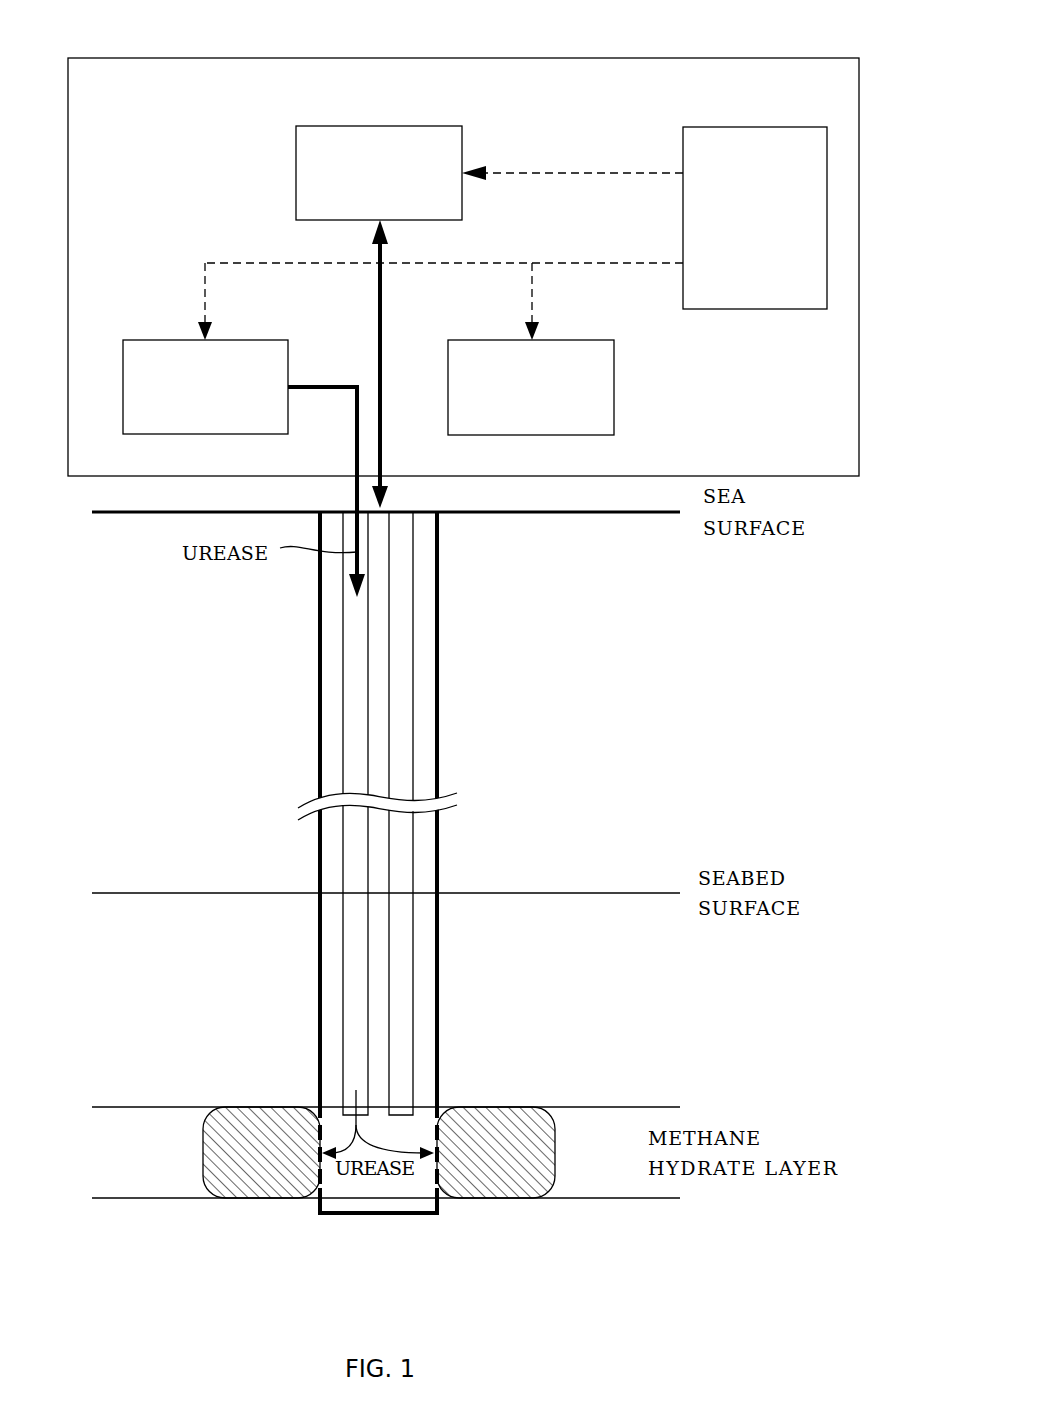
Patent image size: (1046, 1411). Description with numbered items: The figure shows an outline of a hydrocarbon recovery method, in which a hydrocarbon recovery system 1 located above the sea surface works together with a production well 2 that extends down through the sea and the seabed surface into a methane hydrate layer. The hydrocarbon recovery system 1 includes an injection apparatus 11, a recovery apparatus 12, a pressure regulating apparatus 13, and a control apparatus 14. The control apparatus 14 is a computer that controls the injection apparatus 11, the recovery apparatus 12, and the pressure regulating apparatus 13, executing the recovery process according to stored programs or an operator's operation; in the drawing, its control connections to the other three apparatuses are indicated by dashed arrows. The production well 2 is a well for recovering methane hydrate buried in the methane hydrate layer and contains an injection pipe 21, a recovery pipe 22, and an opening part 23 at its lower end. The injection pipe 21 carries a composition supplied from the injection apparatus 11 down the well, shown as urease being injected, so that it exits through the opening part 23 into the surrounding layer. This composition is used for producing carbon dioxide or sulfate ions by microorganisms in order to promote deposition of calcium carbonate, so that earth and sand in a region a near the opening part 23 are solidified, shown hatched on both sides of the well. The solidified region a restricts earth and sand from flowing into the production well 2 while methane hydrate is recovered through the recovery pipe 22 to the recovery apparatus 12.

The hydrocarbon recovery system 1 is at (822, 57).
The injection apparatus 11 is at (250, 340).
The recovery apparatus 12 is at (565, 340).
The pressure regulating apparatus 13 is at (428, 126).
The control apparatus 14 is at (765, 127).
The production well 2 is at (440, 625).
The injection pipe 21 is at (343, 722).
The recovery pipe 22 is at (413, 720).
The opening part 23 is at (432, 1172).
The region near the opening part a is at (262, 1107).